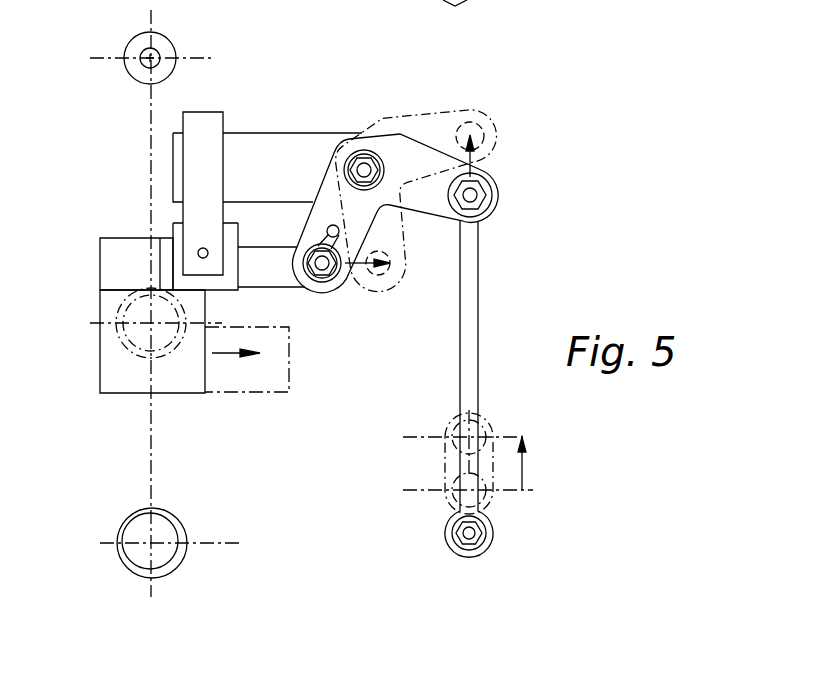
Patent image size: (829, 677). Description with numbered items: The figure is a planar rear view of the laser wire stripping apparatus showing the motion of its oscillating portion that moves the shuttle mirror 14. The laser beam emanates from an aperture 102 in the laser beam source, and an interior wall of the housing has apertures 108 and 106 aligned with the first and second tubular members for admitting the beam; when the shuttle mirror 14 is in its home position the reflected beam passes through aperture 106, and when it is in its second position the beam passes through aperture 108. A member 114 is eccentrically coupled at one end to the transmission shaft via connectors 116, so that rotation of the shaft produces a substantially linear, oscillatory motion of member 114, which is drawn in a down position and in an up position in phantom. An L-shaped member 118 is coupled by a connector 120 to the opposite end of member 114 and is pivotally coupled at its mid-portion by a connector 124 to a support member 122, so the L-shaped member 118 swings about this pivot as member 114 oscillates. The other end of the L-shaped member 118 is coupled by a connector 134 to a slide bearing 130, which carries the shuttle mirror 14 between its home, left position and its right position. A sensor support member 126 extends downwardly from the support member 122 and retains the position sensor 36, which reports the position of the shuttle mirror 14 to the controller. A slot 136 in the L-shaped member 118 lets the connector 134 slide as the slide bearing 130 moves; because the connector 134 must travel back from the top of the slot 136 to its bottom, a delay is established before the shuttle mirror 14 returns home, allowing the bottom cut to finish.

The shuttle mirror 14 is at (197, 316).
The position sensor 36 is at (199, 249).
The aperture 102 is at (157, 54).
The aperture 106 is at (133, 340).
The aperture 108 is at (160, 540).
The member 114 is at (473, 288).
The connectors 116 is at (482, 535).
The L-shaped member 118 is at (397, 133).
The connector 120 is at (488, 196).
The support member 122 is at (278, 177).
The connector 124 is at (354, 150).
The sensor support member 126 is at (203, 120).
The slide bearing 130 is at (291, 289).
The connector 134 is at (323, 273).
The slot 136 is at (326, 231).